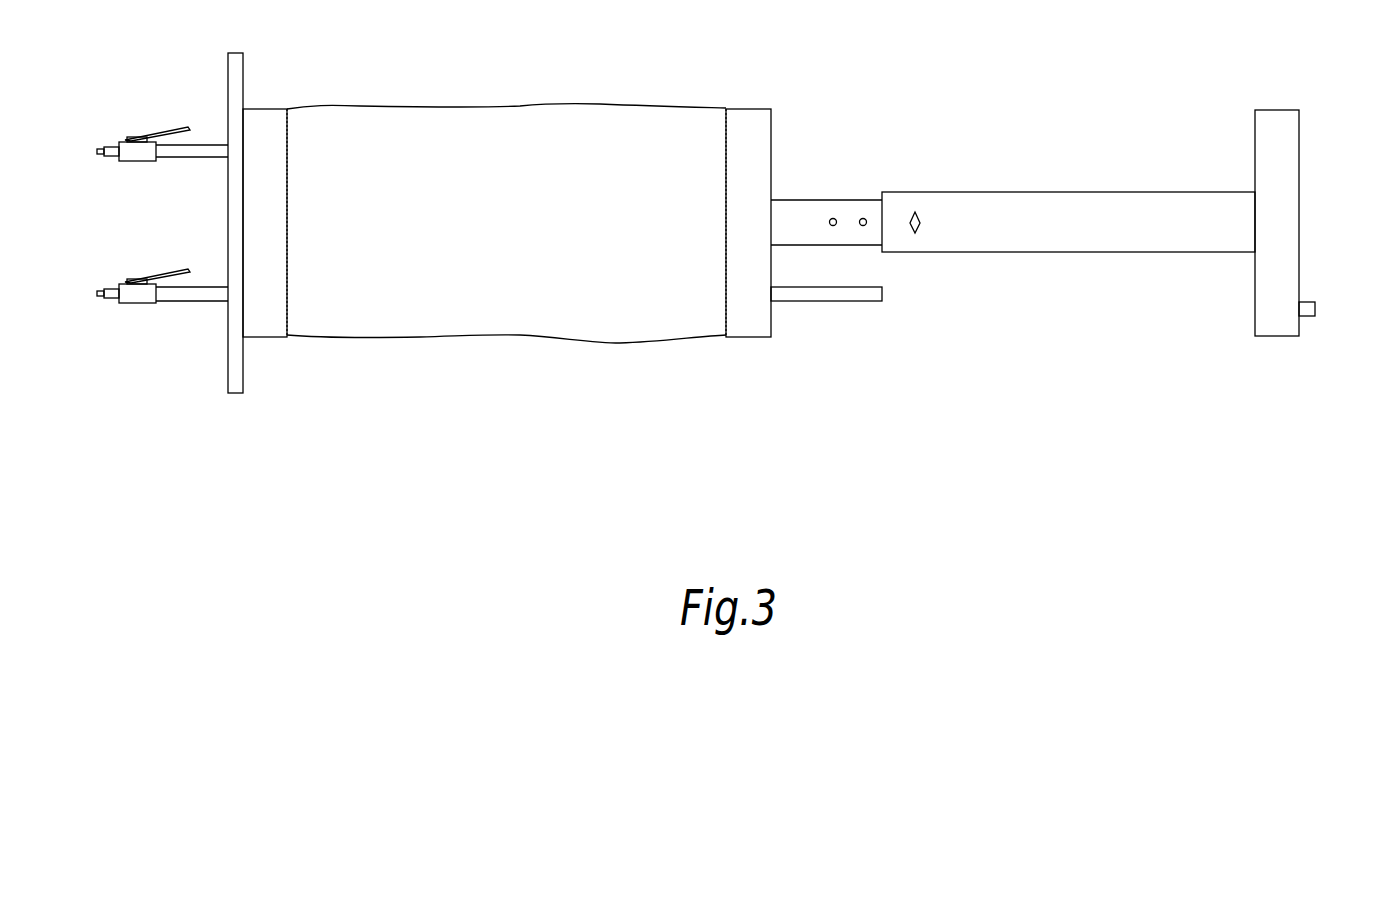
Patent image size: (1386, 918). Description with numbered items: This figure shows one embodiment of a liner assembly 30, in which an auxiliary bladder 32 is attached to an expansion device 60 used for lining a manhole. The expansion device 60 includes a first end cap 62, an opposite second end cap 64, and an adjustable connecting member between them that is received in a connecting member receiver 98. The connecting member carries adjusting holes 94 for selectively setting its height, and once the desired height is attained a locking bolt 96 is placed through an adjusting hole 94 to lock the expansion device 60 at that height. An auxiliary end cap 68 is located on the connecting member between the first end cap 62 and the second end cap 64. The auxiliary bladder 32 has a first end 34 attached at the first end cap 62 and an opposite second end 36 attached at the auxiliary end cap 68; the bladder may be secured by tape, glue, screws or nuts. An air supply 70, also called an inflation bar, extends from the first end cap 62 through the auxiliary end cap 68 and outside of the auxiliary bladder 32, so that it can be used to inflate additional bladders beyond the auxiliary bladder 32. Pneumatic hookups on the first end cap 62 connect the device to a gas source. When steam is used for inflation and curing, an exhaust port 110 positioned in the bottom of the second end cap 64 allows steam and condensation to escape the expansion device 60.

The liner assembly 30 is at (1135, 48).
The auxiliary bladder 32 is at (580, 108).
The first end 34 is at (287, 313).
The second end 36 is at (726, 311).
The expansion device 60 is at (1302, 167).
The first end cap 62 is at (270, 110).
The second end cap 64 is at (1273, 118).
The auxiliary end cap 68 is at (746, 116).
The air supply 70 is at (830, 301).
The adjusting holes 94 is at (833, 218).
The locking bolt 96 is at (915, 211).
The connecting member receiver 98 is at (1065, 200).
The exhaust port 110 is at (1316, 302).